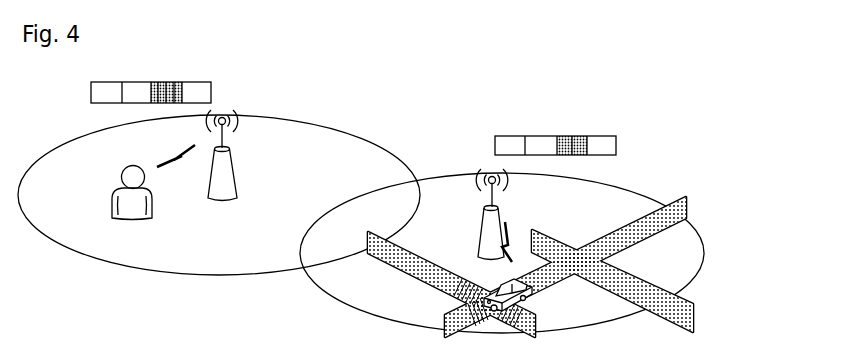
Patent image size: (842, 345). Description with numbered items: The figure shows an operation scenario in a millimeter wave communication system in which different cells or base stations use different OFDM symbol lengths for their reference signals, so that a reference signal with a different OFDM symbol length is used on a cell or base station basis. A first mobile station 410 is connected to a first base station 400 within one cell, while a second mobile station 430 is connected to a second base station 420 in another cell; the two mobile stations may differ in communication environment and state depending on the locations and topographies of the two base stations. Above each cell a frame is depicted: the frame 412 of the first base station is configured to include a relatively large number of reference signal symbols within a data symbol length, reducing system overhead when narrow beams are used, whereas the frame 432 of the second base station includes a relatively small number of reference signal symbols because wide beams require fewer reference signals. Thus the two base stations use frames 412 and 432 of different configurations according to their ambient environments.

The first base station 400 is at (226, 179).
The first mobile station 410 is at (153, 204).
The frame 412 is at (163, 78).
The second base station 420 is at (474, 215).
The second mobile station 430 is at (534, 304).
The frame 432 is at (567, 131).